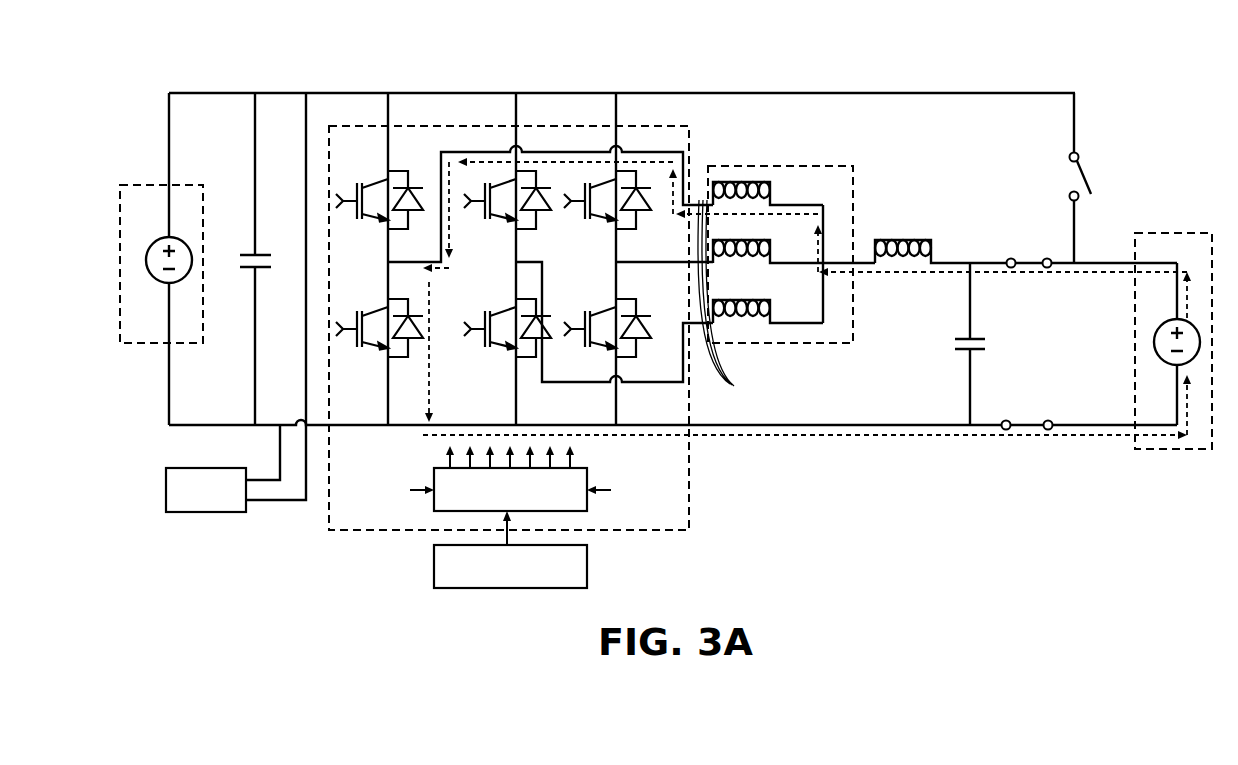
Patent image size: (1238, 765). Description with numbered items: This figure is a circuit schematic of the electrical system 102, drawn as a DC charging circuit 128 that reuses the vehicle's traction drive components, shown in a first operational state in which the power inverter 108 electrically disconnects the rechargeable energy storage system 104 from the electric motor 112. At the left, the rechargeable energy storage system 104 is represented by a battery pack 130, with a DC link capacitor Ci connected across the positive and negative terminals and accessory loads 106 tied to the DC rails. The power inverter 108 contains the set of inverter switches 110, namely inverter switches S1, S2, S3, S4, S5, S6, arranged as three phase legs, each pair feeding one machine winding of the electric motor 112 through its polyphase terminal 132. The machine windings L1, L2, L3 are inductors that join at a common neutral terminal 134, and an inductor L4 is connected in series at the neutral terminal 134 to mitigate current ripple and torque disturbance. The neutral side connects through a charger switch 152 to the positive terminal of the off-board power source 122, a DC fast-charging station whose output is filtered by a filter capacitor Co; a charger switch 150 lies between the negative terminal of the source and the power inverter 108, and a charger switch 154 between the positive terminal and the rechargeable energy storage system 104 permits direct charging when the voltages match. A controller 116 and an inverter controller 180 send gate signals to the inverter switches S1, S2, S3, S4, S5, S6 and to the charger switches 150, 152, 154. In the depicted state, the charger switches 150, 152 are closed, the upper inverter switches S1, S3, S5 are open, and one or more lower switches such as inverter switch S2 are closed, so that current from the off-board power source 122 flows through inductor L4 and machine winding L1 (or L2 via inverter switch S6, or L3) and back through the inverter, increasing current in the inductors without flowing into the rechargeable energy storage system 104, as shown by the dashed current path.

The electrical system 102 is at (283, 62).
The DC charging circuit 128 is at (655, 310).
The rechargeable energy storage system 104 is at (118, 196).
The battery pack 130 is at (150, 250).
The accessory loads 106 is at (189, 501).
The power inverter 108 is at (692, 128).
The set of inverter switches 110 is at (637, 68).
The electric motor 112 is at (838, 166).
The controller 116 is at (493, 578).
The off-board power source 122 is at (1163, 233).
The polyphase terminal 132 is at (737, 299).
The neutral terminal 134 is at (855, 262).
The charger switch 150 is at (1007, 420).
The charger switch 152 is at (1011, 258).
The charger switch 154 is at (1080, 157).
The inverter controller 180 is at (493, 501).
The inverter switch S1 is at (379, 209).
The inverter switch S2 is at (379, 338).
The inverter switch S3 is at (507, 209).
The inverter switch S4 is at (507, 338).
The inverter switch S5 is at (607, 209).
The inverter switch S6 is at (607, 338).
The DC link capacitor Ci is at (252, 252).
The filter capacitor Co is at (968, 337).
The machine winding L1 is at (770, 182).
The machine winding L2 is at (770, 240).
The machine winding L3 is at (770, 300).
The inductor L4 is at (931, 240).